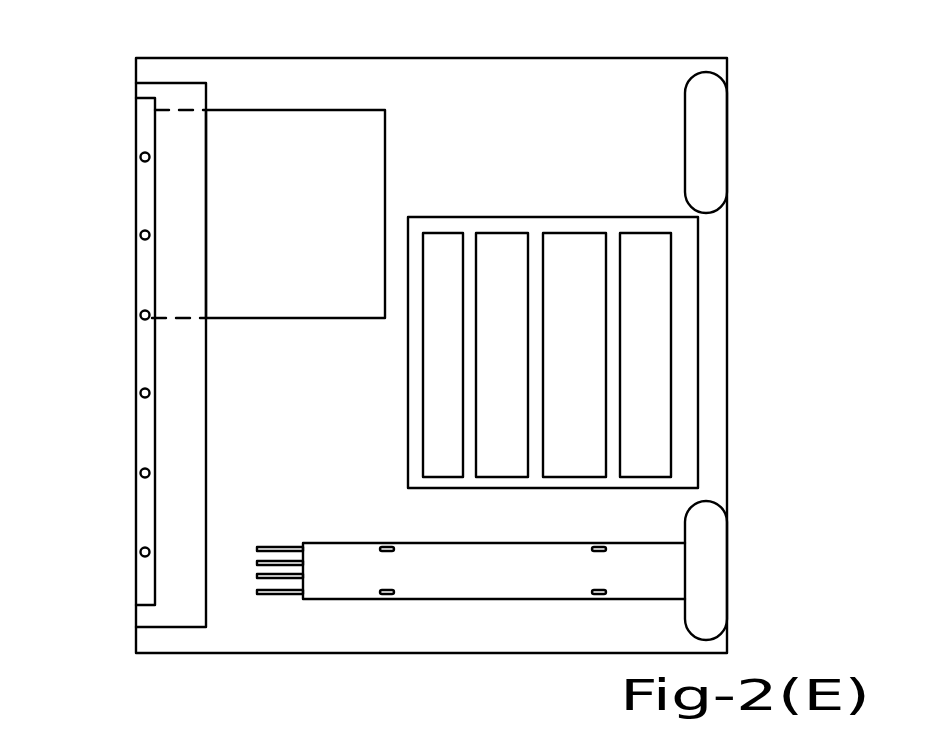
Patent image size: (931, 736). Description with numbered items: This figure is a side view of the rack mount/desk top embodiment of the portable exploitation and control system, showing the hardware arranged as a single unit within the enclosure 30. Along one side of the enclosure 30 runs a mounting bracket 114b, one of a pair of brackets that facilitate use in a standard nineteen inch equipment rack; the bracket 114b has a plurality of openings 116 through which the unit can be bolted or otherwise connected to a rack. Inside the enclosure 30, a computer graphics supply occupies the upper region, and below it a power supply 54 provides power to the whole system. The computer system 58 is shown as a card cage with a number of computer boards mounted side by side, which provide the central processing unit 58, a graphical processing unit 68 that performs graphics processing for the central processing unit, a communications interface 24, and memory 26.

The enclosure 30 is at (322, 122).
The central processing unit 58 is at (438, 233).
The graphical processing unit 68 is at (497, 233).
The communications interface 24 is at (570, 233).
The memory 26 is at (644, 233).
The power supply 54 is at (495, 588).
The openings 116 is at (141, 233).
The mounting bracket 114b is at (147, 432).